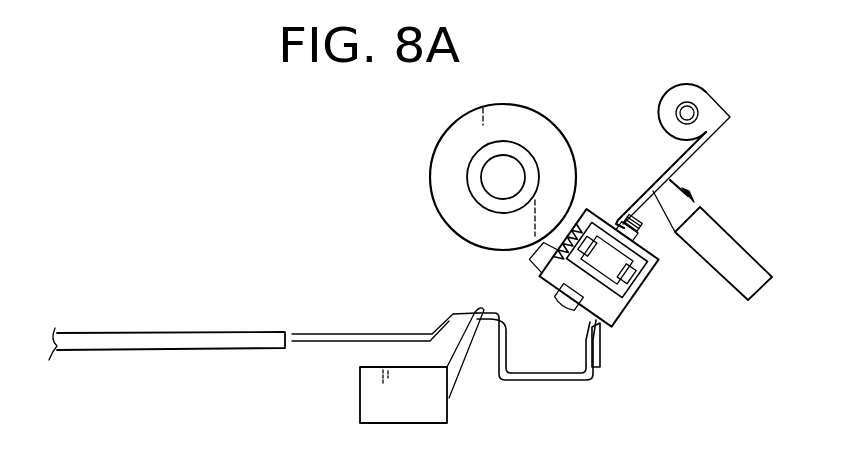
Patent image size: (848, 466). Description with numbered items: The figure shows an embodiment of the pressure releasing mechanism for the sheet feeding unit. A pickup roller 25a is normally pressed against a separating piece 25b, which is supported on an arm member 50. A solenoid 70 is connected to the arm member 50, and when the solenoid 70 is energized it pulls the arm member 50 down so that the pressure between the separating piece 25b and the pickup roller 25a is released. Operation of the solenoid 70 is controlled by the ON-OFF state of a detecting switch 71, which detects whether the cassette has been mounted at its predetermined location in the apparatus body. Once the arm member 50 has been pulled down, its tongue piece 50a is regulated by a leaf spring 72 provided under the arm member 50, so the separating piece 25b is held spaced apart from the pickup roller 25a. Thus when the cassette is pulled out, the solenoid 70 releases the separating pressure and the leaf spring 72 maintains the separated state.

The pickup roller 25a is at (533, 120).
The separating piece 25b is at (577, 213).
The arm member 50 is at (692, 146).
The tongue piece 50a is at (600, 352).
The solenoid 70 is at (767, 283).
The detecting switch 71 is at (365, 405).
The leaf spring 72 is at (552, 380).